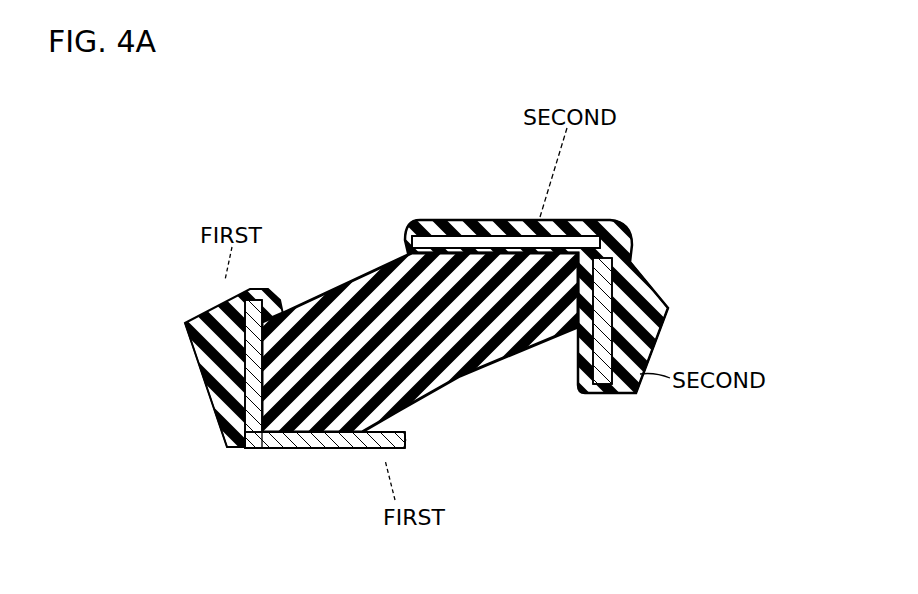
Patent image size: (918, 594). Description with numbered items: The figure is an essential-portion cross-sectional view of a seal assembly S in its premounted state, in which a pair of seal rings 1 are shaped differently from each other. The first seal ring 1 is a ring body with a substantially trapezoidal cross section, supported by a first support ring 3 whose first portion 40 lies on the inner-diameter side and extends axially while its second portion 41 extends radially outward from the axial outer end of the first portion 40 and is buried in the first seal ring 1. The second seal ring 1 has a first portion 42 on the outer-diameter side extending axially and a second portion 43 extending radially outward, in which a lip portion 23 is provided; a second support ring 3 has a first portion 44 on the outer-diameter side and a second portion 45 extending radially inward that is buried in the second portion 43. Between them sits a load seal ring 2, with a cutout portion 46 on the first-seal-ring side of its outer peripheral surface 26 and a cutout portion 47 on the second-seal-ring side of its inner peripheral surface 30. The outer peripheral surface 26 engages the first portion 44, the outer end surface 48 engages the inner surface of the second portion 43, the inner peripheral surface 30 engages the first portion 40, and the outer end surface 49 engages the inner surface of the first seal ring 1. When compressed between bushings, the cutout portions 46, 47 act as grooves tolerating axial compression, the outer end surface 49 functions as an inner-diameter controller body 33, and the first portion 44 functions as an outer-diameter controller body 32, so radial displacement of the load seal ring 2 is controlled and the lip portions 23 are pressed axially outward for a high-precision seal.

The seal ring 1 is at (627, 228).
The load seal ring 2 is at (453, 378).
The support ring 3 is at (410, 446).
The lip portion 23 is at (185, 325).
The outer peripheral surface 26 is at (492, 222).
The inner peripheral surface 30 is at (298, 453).
The outer-diameter controller body 32 is at (462, 217).
The inner-diameter controller body 33 is at (355, 450).
The first portion of first support ring 40 is at (330, 452).
The second portion of first support ring 41 is at (248, 360).
The first portion of second seal ring 42 is at (517, 220).
The second portion of second seal ring 43 is at (573, 360).
The first portion of second support ring 44 is at (557, 220).
The second portion of second support ring 45 is at (662, 309).
The cutout portion 46 is at (370, 283).
The cutout portion 47 is at (492, 358).
The outer end surface 48 is at (590, 288).
The outer end surface 49 is at (257, 448).
The seal assembly S is at (613, 207).